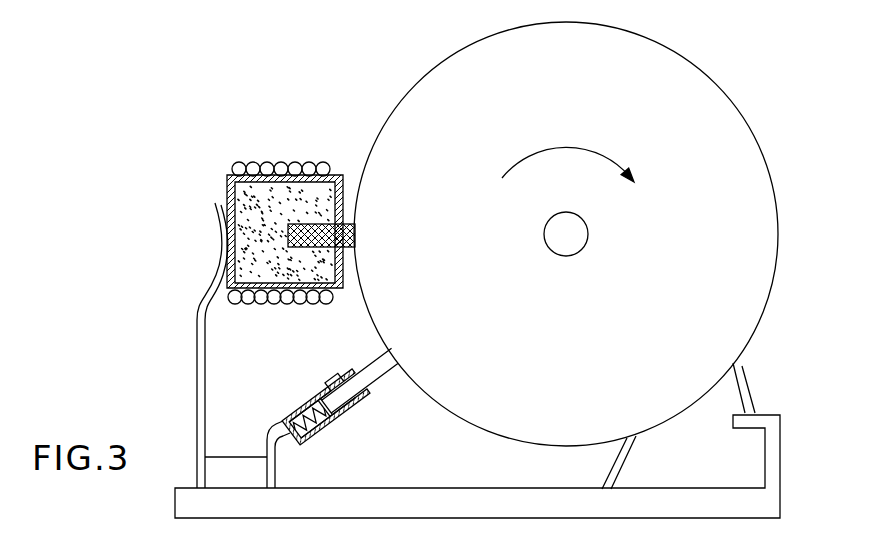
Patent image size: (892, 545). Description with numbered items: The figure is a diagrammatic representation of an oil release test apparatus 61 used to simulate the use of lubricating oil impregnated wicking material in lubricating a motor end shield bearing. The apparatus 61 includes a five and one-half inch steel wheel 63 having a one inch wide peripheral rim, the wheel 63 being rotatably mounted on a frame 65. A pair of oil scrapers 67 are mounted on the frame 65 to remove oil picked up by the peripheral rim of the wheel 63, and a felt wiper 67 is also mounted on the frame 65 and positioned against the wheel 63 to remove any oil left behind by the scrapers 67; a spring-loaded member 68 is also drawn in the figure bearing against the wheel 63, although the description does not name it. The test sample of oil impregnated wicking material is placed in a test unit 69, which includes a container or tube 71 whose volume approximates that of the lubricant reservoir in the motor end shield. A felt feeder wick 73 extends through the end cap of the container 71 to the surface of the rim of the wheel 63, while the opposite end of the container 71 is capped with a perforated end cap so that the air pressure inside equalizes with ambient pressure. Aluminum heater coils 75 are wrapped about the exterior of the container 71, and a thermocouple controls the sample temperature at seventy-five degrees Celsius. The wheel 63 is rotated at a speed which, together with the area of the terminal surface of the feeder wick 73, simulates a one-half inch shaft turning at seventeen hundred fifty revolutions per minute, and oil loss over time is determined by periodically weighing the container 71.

The test apparatus 61 is at (569, 234).
The steel wheel 63 is at (723, 100).
The frame 65 is at (465, 496).
The oil scrapers 67 is at (620, 465).
The spring-loaded plunger 68 is at (376, 380).
The test unit 69 is at (317, 211).
The container 71 is at (230, 175).
The felt feeder wick 73 is at (355, 236).
The heater coils 75 is at (283, 162).